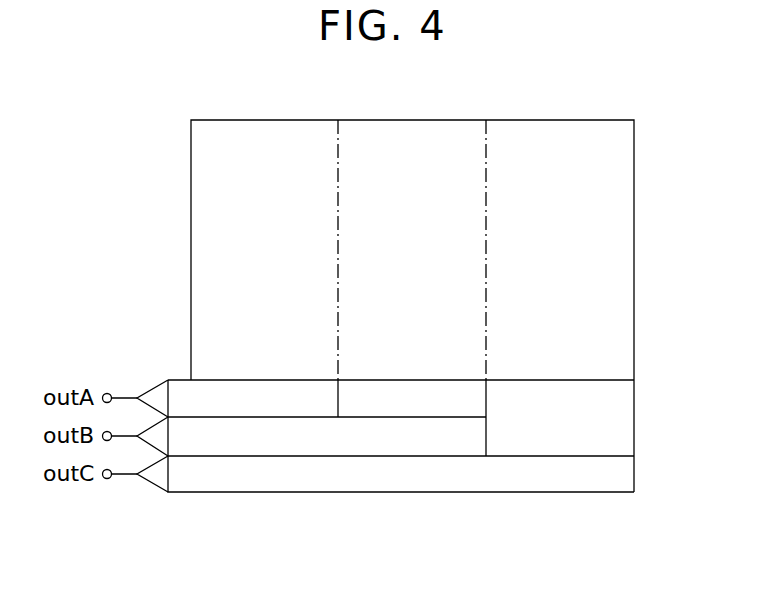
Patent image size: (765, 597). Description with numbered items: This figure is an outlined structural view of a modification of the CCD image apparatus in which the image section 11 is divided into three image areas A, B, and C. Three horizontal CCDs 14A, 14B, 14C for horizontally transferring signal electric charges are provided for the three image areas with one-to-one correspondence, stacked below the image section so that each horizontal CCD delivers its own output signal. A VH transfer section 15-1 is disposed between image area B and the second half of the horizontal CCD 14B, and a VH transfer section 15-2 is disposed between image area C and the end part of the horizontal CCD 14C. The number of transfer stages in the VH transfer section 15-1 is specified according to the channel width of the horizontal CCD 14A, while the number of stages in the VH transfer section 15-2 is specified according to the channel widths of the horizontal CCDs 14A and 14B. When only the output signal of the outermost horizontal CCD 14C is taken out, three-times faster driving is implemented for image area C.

The image section 11 is at (643, 317).
The horizontal CCD 14A is at (285, 403).
The horizontal CCD 14B is at (452, 442).
The horizontal CCD 14C is at (562, 470).
The VH transfer section 15-1 is at (413, 397).
The VH transfer section 15-2 is at (558, 397).